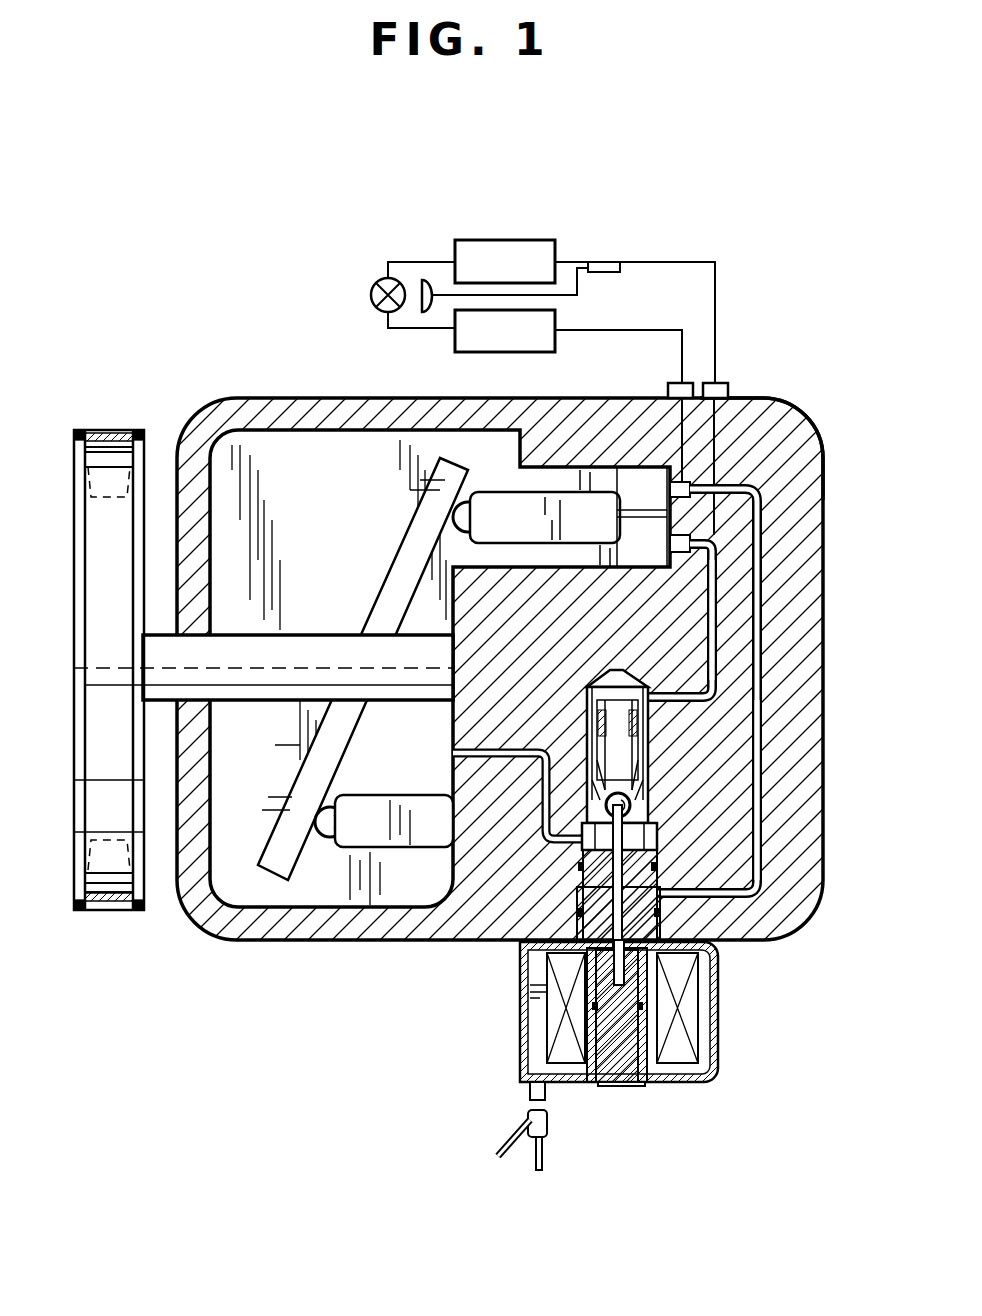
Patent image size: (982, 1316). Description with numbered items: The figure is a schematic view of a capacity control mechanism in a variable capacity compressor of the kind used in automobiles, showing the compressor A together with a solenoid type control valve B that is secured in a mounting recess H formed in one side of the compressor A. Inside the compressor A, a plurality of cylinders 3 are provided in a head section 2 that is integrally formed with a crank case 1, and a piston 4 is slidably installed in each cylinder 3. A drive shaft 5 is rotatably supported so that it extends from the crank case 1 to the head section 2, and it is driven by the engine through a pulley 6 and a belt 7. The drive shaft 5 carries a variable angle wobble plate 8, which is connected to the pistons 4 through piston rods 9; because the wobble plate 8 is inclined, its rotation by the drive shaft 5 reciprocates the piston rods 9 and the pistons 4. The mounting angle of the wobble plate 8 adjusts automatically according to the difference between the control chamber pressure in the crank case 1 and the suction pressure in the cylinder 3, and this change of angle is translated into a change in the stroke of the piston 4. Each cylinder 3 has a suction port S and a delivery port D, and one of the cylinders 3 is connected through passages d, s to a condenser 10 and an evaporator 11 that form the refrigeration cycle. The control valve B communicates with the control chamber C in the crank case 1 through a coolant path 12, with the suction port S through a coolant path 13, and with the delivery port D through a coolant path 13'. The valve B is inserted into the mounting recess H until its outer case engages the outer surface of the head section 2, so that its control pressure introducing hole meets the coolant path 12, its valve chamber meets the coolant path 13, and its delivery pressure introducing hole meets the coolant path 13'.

The crank case 1 is at (240, 397).
The head section 2 is at (786, 398).
The cylinder 3 is at (535, 567).
The piston 4 is at (637, 490).
The drive shaft 5 is at (285, 635).
The pulley 6 is at (80, 430).
The belt 7 is at (112, 432).
The variable angle wobble plate 8 is at (320, 753).
The piston rod 9 is at (500, 490).
The condenser 10 is at (455, 335).
The evaporator 11 is at (512, 240).
The coolant path 12 is at (513, 747).
The coolant path 13 is at (561, 620).
The coolant path 13' is at (806, 837).
The compressor A is at (176, 181).
The solenoid type control valve B is at (425, 1071).
The control chamber C is at (259, 489).
The delivery port D is at (755, 470).
The suction port S is at (800, 470).
The passage d is at (652, 398).
The passage s is at (722, 440).
The mounting recess H is at (578, 868).